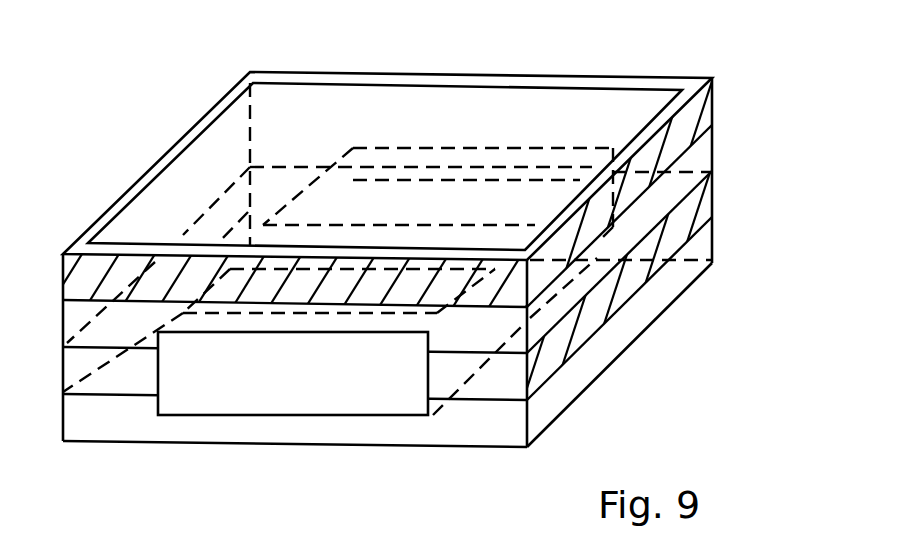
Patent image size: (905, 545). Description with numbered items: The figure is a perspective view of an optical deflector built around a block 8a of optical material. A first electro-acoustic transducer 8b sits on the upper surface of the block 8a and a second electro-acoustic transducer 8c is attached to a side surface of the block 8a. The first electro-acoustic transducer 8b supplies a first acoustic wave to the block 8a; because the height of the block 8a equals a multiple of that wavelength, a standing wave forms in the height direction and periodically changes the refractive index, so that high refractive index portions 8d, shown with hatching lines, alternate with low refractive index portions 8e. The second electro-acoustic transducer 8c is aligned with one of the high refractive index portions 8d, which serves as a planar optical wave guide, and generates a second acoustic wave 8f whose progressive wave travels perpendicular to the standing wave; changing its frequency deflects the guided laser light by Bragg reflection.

The block 8a is at (718, 140).
The first electro-acoustic transducer 8b is at (627, 110).
The second electro-acoustic transducer 8c is at (288, 392).
The high refractive index portions 8d is at (717, 104).
The low refractive index portions 8e is at (697, 156).
The second acoustic wave 8f is at (350, 227).